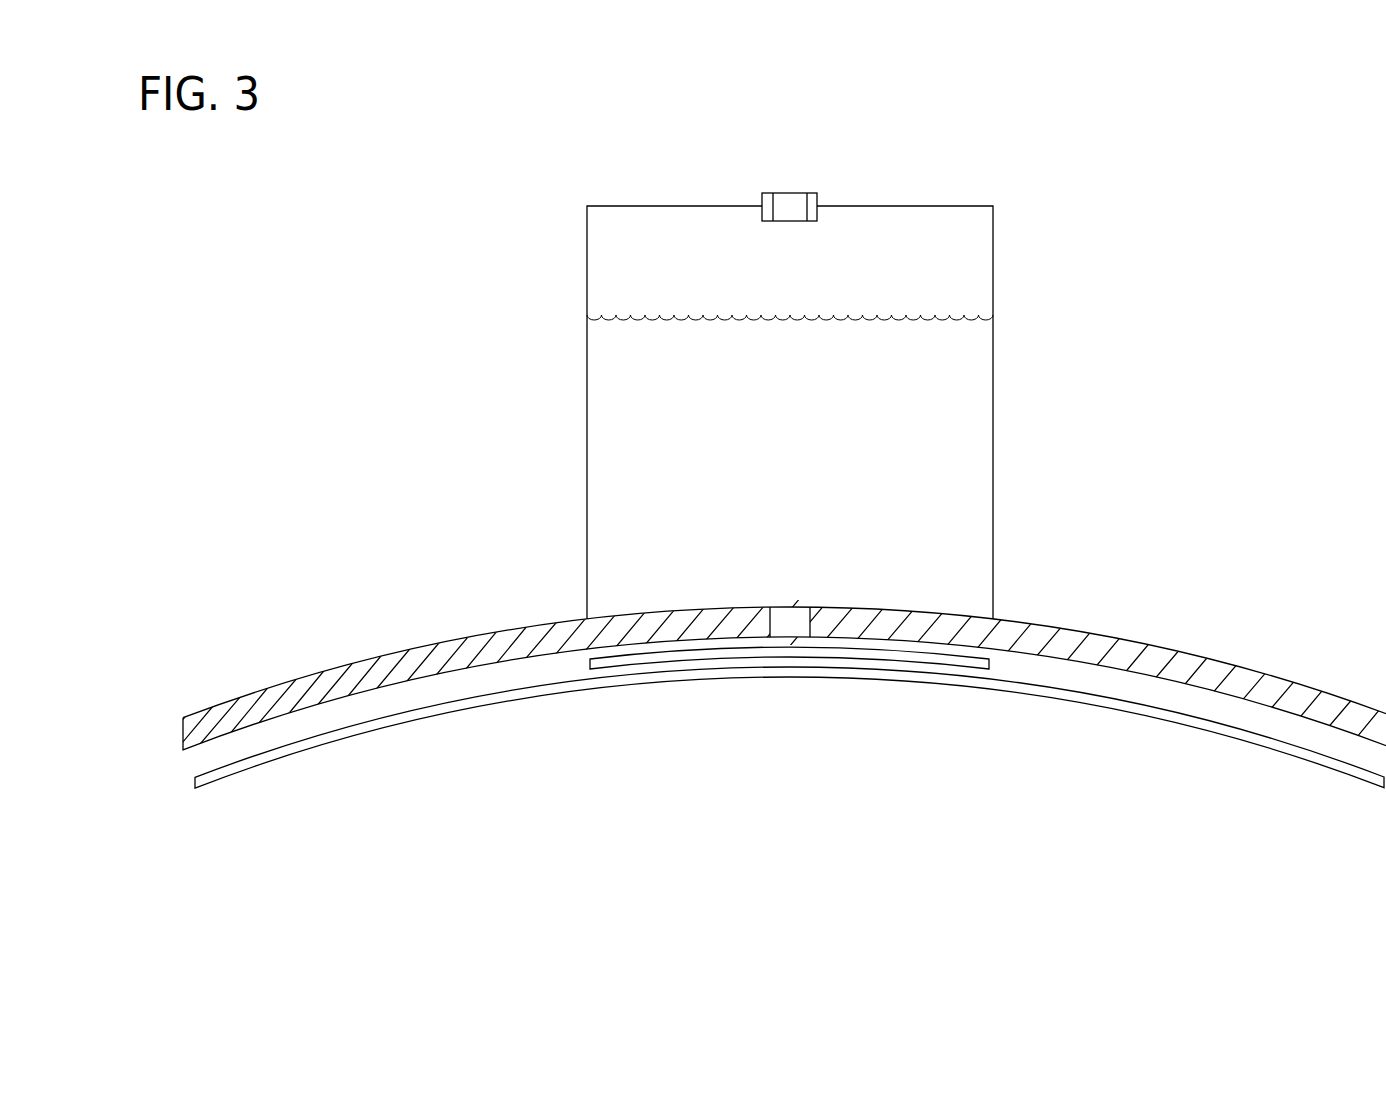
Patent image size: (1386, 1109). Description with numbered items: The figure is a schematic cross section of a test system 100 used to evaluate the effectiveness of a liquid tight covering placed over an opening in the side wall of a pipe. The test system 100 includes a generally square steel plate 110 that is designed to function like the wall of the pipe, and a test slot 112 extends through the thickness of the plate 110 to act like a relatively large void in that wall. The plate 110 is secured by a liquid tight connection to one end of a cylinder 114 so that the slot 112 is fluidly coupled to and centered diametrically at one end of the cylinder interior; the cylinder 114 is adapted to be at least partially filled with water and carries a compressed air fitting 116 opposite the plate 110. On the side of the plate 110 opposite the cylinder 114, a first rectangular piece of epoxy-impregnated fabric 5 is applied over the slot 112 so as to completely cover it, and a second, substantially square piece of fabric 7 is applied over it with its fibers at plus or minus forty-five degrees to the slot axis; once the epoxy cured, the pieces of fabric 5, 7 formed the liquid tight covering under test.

The test system 100 is at (438, 820).
The steel plate 110 is at (267, 686).
The test slot 112 is at (800, 615).
The cylinder 114 is at (585, 418).
The compressed air fitting 116 is at (791, 198).
The first piece of fabric 5 is at (892, 656).
The second piece of fabric 7 is at (1038, 690).